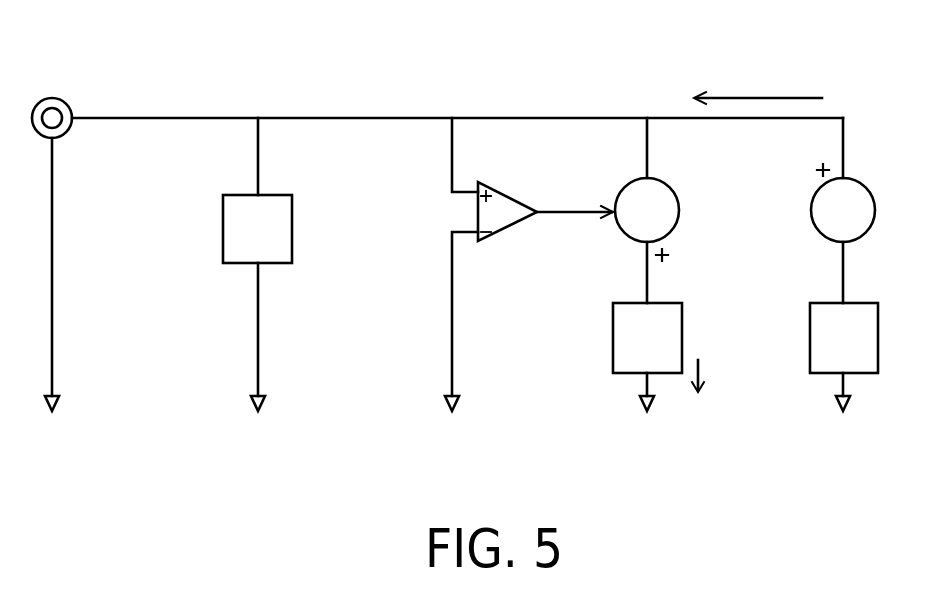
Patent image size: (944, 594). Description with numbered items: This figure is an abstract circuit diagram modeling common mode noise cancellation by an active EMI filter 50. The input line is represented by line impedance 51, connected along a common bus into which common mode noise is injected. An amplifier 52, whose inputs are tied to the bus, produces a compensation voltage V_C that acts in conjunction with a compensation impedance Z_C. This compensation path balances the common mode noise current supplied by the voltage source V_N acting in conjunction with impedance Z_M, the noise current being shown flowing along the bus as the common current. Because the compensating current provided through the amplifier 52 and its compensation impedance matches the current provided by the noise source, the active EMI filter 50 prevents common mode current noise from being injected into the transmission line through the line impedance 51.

The active EMI filter 50 is at (537, 75).
The line impedance 51 is at (292, 247).
The amplifier 52 is at (516, 198).